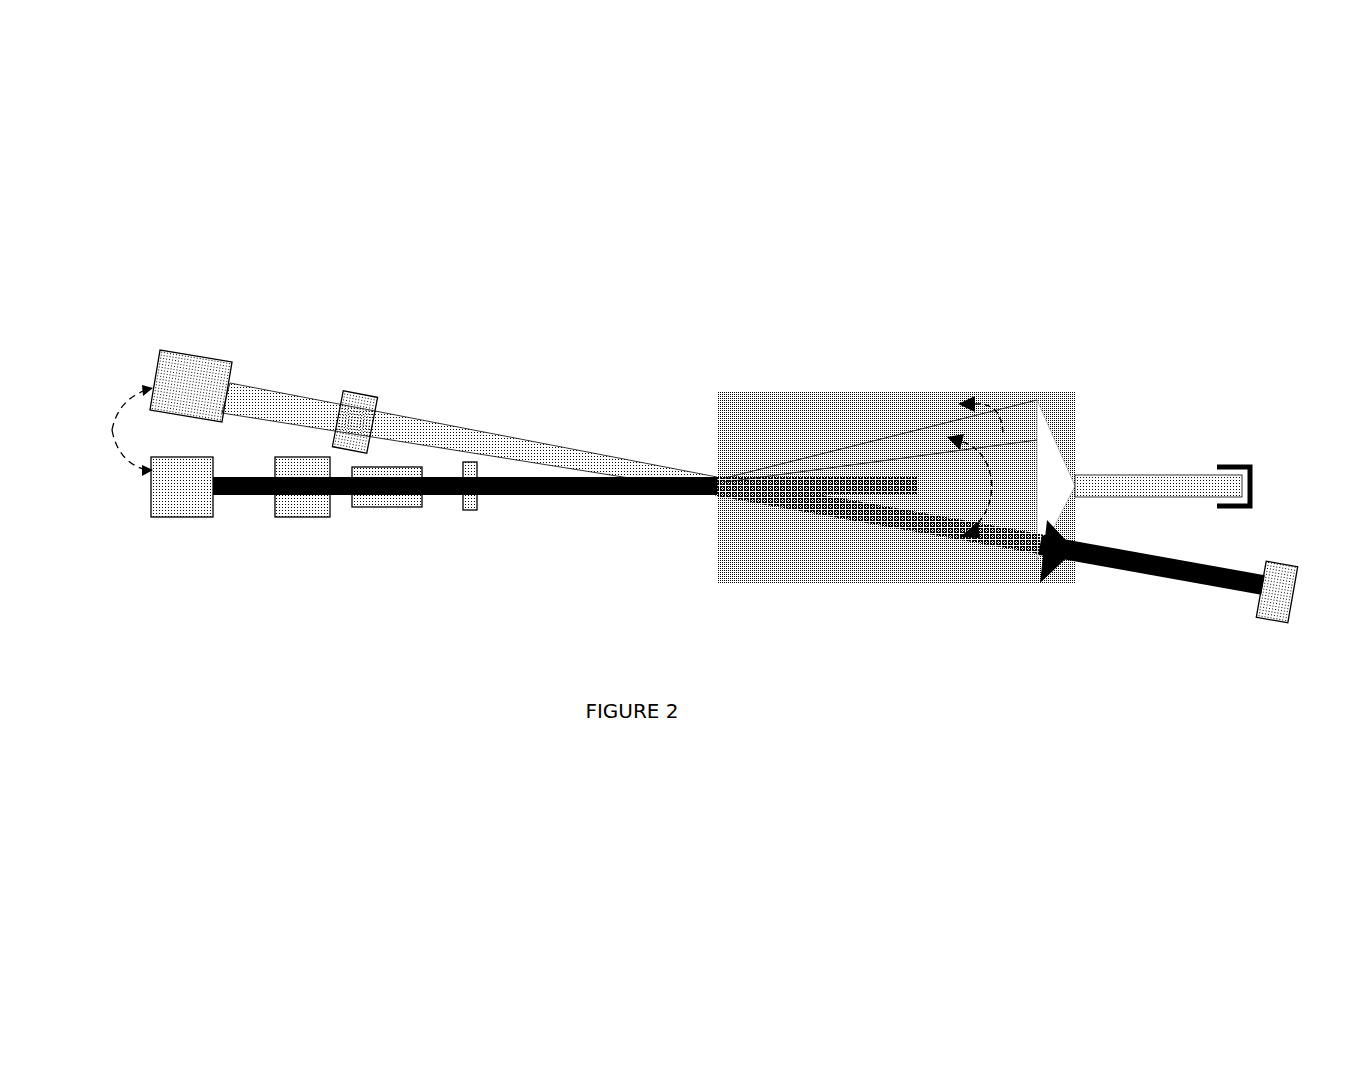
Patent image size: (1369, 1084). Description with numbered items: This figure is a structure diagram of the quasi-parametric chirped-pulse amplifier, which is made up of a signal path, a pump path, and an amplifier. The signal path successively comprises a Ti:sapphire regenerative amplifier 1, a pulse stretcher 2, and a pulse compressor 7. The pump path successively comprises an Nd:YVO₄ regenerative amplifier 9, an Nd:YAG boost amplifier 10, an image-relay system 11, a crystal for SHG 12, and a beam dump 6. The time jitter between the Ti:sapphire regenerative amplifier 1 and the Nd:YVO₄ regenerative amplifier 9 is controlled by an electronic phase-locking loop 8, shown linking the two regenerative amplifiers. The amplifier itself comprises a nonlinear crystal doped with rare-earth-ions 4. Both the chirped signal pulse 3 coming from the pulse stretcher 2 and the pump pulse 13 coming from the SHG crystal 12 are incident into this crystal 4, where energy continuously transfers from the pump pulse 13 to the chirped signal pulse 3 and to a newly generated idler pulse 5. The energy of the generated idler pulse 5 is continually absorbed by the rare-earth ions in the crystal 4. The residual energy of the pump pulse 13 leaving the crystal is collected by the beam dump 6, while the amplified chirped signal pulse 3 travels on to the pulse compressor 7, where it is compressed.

The Ti:sapphire regenerative amplifier 1 is at (197, 355).
The pulse stretcher 2 is at (367, 392).
The chirped signal pulse 3 is at (530, 455).
The nonlinear crystal doped with rare-earth-ions 4 is at (733, 392).
The idler pulse 5 is at (1042, 447).
The beam dump 6 is at (1257, 468).
The pulse compressor 7 is at (1293, 567).
The electronic phase-locking loop 8 is at (112, 430).
The Nd:YVO₄ regenerative amplifier 9 is at (187, 520).
The Nd:YAG boost amplifier 10 is at (302, 518).
The image-relay system 11 is at (382, 507).
The crystal for SHG 12 is at (477, 507).
The pump pulse 13 is at (592, 497).